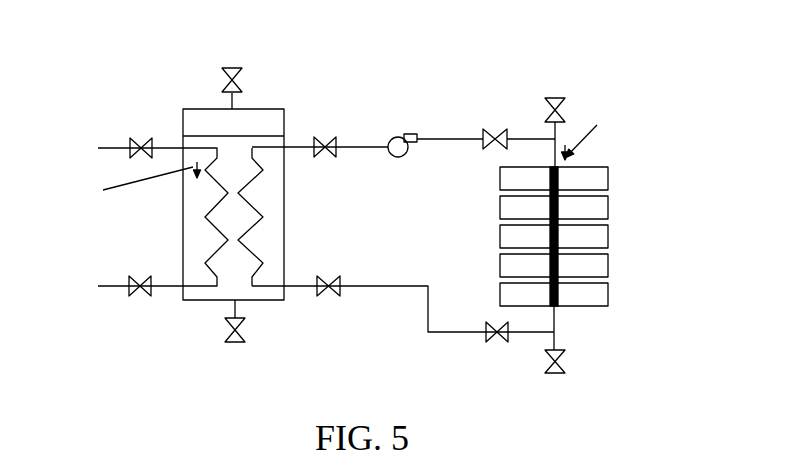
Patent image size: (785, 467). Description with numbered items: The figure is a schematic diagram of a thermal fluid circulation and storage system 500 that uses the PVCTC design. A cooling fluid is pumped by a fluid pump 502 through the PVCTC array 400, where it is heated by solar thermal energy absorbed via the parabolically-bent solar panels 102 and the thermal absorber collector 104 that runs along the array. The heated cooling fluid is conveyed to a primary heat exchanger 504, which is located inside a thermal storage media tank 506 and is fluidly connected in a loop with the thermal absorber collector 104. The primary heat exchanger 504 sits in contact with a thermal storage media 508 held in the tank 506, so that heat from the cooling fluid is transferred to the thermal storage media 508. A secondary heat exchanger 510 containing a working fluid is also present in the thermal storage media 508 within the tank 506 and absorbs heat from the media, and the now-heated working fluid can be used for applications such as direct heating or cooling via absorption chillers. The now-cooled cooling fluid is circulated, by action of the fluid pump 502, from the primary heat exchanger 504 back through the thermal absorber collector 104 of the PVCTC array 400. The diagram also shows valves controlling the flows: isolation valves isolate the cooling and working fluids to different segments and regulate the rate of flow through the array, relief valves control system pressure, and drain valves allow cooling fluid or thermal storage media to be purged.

The thermal fluid circulation and storage system 500 is at (650, 34).
The fluid pump 502 is at (417, 154).
The primary heat exchanger 504 is at (264, 212).
The thermal storage media tank 506 is at (202, 302).
The thermal storage media 508 is at (242, 140).
The secondary heat exchanger 510 is at (221, 246).
The PVCTC array 400 is at (634, 250).
The solar panel 102 is at (606, 238).
The thermal absorber collector 104 is at (559, 292).